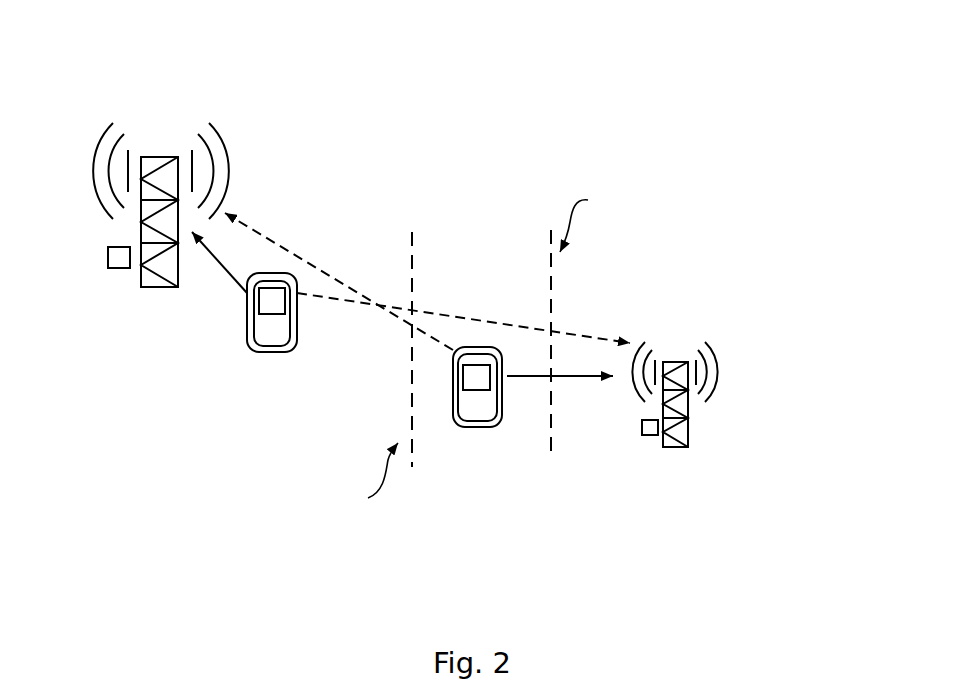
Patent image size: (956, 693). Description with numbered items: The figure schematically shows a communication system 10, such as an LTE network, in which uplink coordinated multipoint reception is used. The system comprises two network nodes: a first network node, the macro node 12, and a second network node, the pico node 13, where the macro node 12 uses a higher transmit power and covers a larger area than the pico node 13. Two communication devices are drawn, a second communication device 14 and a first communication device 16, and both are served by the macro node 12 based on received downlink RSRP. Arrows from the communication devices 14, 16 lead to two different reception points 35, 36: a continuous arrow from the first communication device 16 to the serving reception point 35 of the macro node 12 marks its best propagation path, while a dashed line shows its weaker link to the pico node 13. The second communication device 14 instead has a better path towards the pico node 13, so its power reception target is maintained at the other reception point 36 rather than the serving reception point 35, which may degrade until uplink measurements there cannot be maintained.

The communication system 10 is at (225, 87).
The macro node 12 is at (108, 258).
The pico node 13 is at (642, 427).
The communication device 14 is at (478, 407).
The communication device 16 is at (280, 328).
The serving reception point 35 is at (232, 165).
The reception point 36 is at (715, 345).